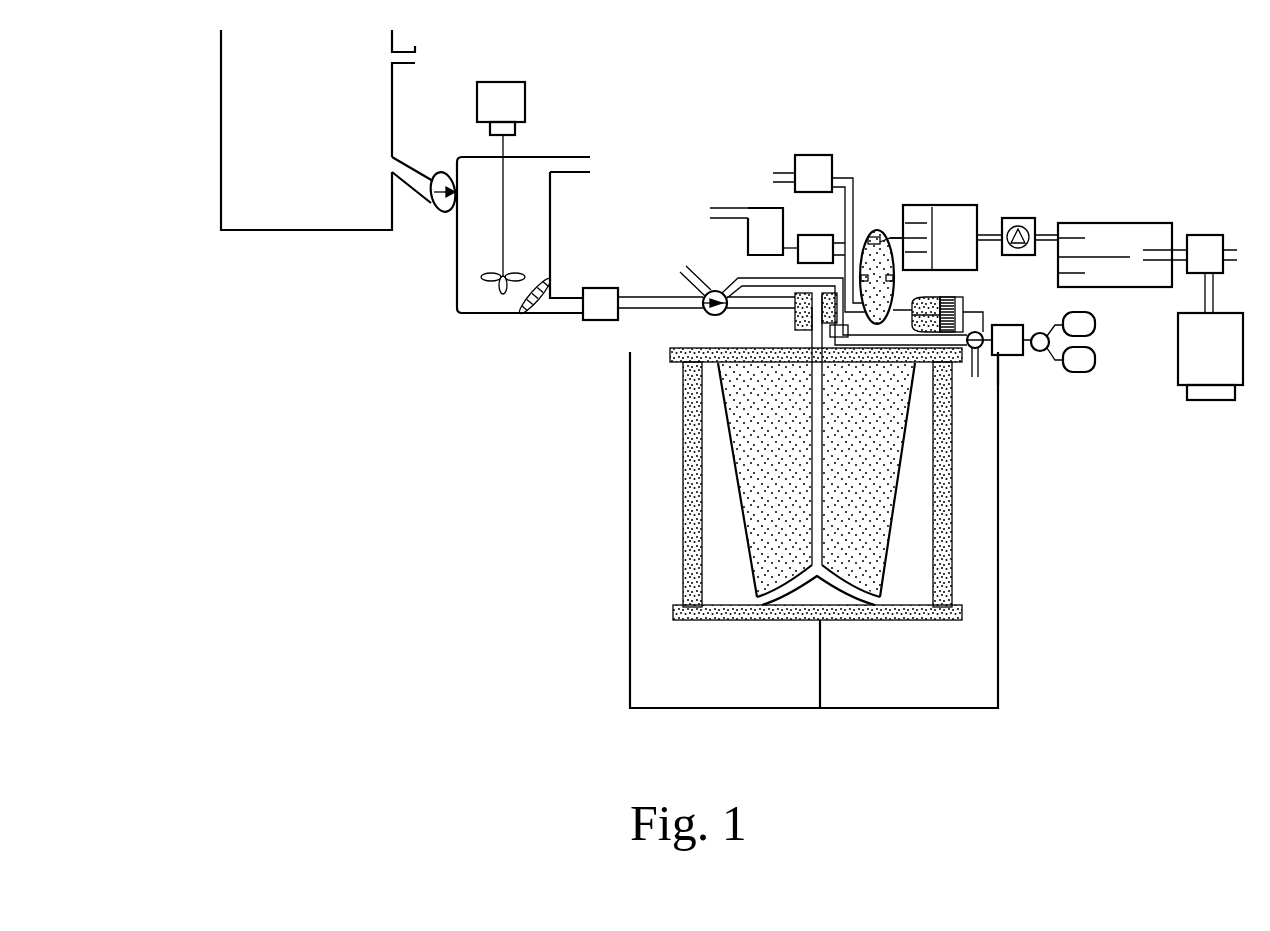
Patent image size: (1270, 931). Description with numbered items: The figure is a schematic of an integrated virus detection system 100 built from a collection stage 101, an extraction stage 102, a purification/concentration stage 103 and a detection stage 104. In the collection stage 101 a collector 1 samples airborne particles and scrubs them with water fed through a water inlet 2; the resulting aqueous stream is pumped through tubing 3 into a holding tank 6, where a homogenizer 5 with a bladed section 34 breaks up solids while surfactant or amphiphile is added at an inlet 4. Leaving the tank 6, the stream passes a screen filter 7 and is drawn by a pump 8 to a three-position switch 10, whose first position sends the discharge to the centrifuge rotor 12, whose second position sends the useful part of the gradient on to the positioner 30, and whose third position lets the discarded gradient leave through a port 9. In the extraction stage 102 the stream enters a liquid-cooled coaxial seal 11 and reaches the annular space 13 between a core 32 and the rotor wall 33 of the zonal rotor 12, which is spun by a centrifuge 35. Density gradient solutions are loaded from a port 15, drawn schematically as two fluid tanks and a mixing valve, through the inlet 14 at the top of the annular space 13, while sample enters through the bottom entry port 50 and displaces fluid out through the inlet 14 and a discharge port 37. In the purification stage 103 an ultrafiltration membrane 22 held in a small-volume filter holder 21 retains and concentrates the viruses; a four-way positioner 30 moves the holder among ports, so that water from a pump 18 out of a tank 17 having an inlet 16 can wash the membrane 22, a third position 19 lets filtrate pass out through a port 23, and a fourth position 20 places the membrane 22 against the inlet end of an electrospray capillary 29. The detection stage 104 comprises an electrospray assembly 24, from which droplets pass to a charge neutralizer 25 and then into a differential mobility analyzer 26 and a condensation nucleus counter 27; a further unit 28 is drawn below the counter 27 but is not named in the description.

The collector 1 is at (297, 144).
The water inlet 2 is at (415, 46).
The tubing 3 is at (438, 178).
The inlet 4 is at (570, 157).
The homogenizer 5 is at (494, 112).
The holding tank 6 is at (457, 246).
The screen filter 7 is at (533, 316).
The pump 8 is at (592, 315).
The port 9 is at (698, 282).
The three-position switch 10 is at (705, 314).
The coaxial seal 11 is at (795, 326).
The centrifuge rotor 12 is at (805, 600).
The annular space 13 is at (900, 565).
The inlet 14 is at (950, 356).
The port 15 is at (997, 354).
The inlet 16 is at (723, 206).
The tank 17 is at (755, 245).
The pump 18 is at (805, 263).
The third position 19 is at (876, 232).
The fourth position 20 is at (893, 278).
The filter holder 21 is at (952, 297).
The ultrafiltration membrane 22 is at (965, 298).
The port 23 is at (803, 187).
The electrospray assembly 24 is at (943, 254).
The charge neutralizer 25 is at (1012, 218).
The differential mobility analyzer 26 is at (1105, 252).
The condensation nucleus counter 27 is at (1195, 268).
The collecting container 28 is at (1198, 367).
The electrospray capillary 29 is at (895, 235).
The four-way positioner 30 is at (880, 230).
The core 32 is at (735, 456).
The rotor wall 33 is at (683, 562).
The bladed section 34 is at (550, 280).
The centrifuge 35 is at (926, 682).
The discharge port 37 is at (999, 378).
The port 50 is at (747, 607).
The integrated virus detection system 100 is at (749, 150).
The collection stage 101 is at (415, 133).
The extraction stage 102 is at (612, 524).
The purification/concentration stage 103 is at (872, 180).
The detection stage 104 is at (1053, 216).